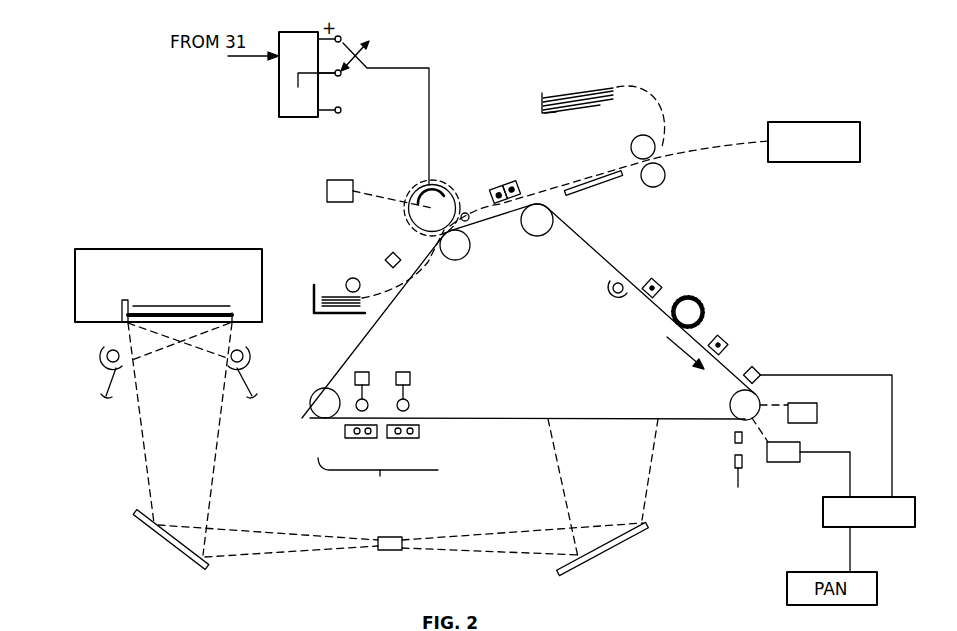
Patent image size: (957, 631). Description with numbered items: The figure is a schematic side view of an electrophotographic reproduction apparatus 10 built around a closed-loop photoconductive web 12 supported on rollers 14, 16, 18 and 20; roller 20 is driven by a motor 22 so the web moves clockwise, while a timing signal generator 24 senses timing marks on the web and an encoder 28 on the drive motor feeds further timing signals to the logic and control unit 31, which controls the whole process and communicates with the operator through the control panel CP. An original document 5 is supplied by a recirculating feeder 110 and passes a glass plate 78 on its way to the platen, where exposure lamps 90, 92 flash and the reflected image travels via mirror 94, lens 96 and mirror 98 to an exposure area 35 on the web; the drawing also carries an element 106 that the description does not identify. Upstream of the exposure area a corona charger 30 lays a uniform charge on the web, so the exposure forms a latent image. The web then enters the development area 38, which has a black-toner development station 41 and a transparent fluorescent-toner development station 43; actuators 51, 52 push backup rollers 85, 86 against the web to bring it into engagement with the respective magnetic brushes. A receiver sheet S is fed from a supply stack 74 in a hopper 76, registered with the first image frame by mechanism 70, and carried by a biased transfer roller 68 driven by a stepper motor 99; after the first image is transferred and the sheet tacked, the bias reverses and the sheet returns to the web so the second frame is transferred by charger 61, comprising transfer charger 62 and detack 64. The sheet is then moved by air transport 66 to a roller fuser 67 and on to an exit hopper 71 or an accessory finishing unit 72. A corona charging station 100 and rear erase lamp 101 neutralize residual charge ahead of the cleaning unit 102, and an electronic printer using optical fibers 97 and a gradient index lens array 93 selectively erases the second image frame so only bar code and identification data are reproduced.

The original document 5 is at (185, 306).
The electrophotographic reproduction apparatus 10 is at (682, 276).
The photoconductive web 12 is at (598, 256).
The roller 14 is at (535, 236).
The roller 16 is at (449, 259).
The roller 18 is at (312, 411).
The roller 20 is at (731, 402).
The motor 22 is at (817, 412).
The timing signal generator 24 is at (758, 368).
The encoder 28 is at (790, 463).
The corona charger 30 is at (728, 340).
The logic and control unit 31 is at (915, 507).
The exposure area 35 is at (614, 432).
The development area 38 is at (378, 479).
The development station 41 is at (366, 439).
The development station 43 is at (416, 439).
The actuator 51 is at (360, 372).
The actuator 52 is at (410, 373).
The charger 61 is at (517, 181).
The transfer charger 62 is at (497, 190).
The detack 64 is at (523, 192).
The air transport 66 is at (587, 193).
The roller fuser 67 is at (672, 174).
The transfer roller 68 is at (429, 183).
The registration mechanism 70 is at (389, 253).
The exit hopper 71 is at (540, 100).
The accessory finishing unit 72 is at (860, 145).
The supply stack 74 is at (332, 296).
The hopper 76 is at (313, 289).
The glass plate 78 is at (351, 278).
The backup roller 85 is at (368, 401).
The backup roller 86 is at (409, 402).
The exposure lamp 90 is at (248, 364).
The exposure lamp 92 is at (103, 361).
The gradient index lens array 93 is at (733, 437).
The mirror 94 is at (190, 560).
The lens 96 is at (393, 551).
The optical fibers 97 is at (733, 462).
The mirror 98 is at (603, 556).
The stepper motor 99 is at (327, 186).
The corona charging station 100 is at (653, 280).
The rear erase lamp 101 is at (613, 296).
The cleaning unit 102 is at (702, 306).
The optical path 106 is at (313, 534).
The recirculating feeder 110 is at (145, 249).
The control panel CP is at (877, 580).
The receiver sheet S is at (395, 280).